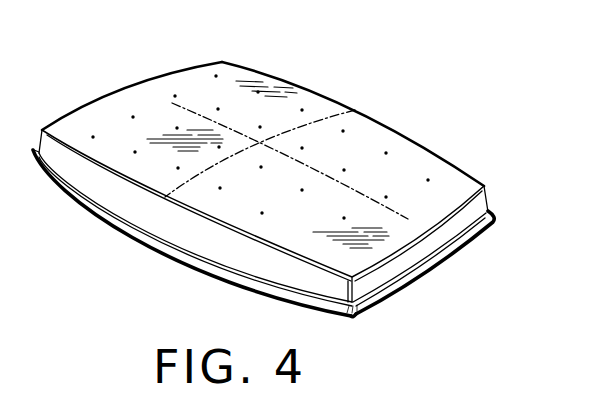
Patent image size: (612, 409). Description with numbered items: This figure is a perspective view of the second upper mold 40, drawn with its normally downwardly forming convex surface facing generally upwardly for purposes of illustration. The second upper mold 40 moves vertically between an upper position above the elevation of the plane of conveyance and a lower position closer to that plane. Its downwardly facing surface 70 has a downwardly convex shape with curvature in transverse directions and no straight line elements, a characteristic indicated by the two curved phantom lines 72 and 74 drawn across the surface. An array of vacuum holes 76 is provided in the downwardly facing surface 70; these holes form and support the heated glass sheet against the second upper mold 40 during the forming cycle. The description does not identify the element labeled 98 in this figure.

The second upper mold 40 is at (500, 188).
The downwardly facing surface 70 is at (363, 122).
The curved phantom line 72 is at (310, 124).
The curved phantom line 74 is at (207, 120).
The vacuum holes 76 is at (177, 130).
The textured edge regions 98 is at (181, 72).